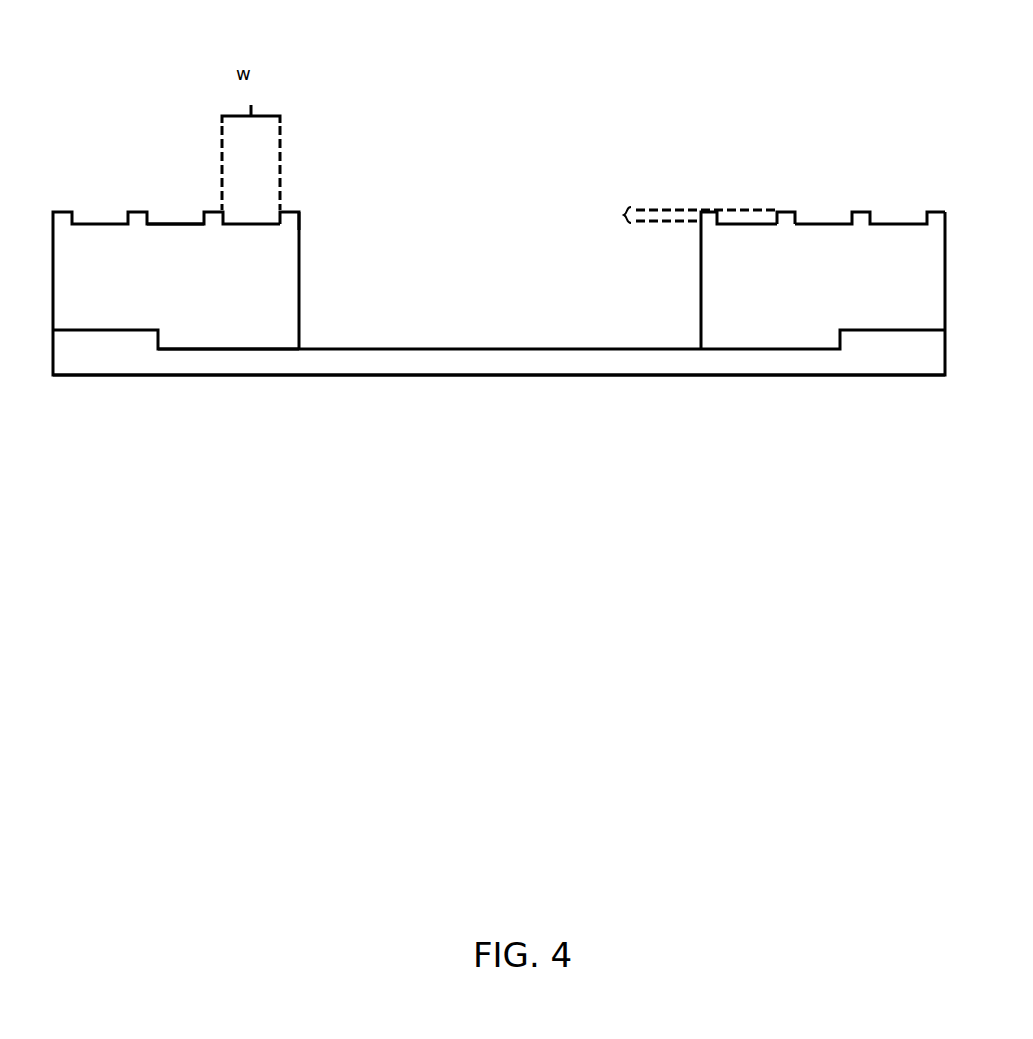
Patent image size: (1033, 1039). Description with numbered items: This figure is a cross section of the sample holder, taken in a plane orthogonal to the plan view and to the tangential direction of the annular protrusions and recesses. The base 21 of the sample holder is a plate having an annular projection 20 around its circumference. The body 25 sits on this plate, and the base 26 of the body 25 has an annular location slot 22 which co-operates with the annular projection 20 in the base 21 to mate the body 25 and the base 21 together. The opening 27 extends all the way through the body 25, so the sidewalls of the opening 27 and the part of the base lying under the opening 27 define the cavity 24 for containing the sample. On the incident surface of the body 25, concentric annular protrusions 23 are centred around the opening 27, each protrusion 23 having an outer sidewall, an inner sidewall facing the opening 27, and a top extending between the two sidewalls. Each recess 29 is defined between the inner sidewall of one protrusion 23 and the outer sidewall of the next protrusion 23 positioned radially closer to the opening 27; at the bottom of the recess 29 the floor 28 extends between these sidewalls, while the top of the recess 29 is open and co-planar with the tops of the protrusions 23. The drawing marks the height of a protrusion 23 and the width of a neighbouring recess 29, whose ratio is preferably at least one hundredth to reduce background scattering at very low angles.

The annular projection 20 is at (85, 330).
The base 21 is at (670, 375).
The annular location slot 22 is at (130, 330).
The protrusion 23 is at (290, 212).
The cavity 24 is at (438, 348).
The body 25 is at (299, 278).
The base of the body 26 is at (250, 348).
The opening 27 is at (569, 205).
The floor 28 is at (822, 224).
The recess 29 is at (170, 223).